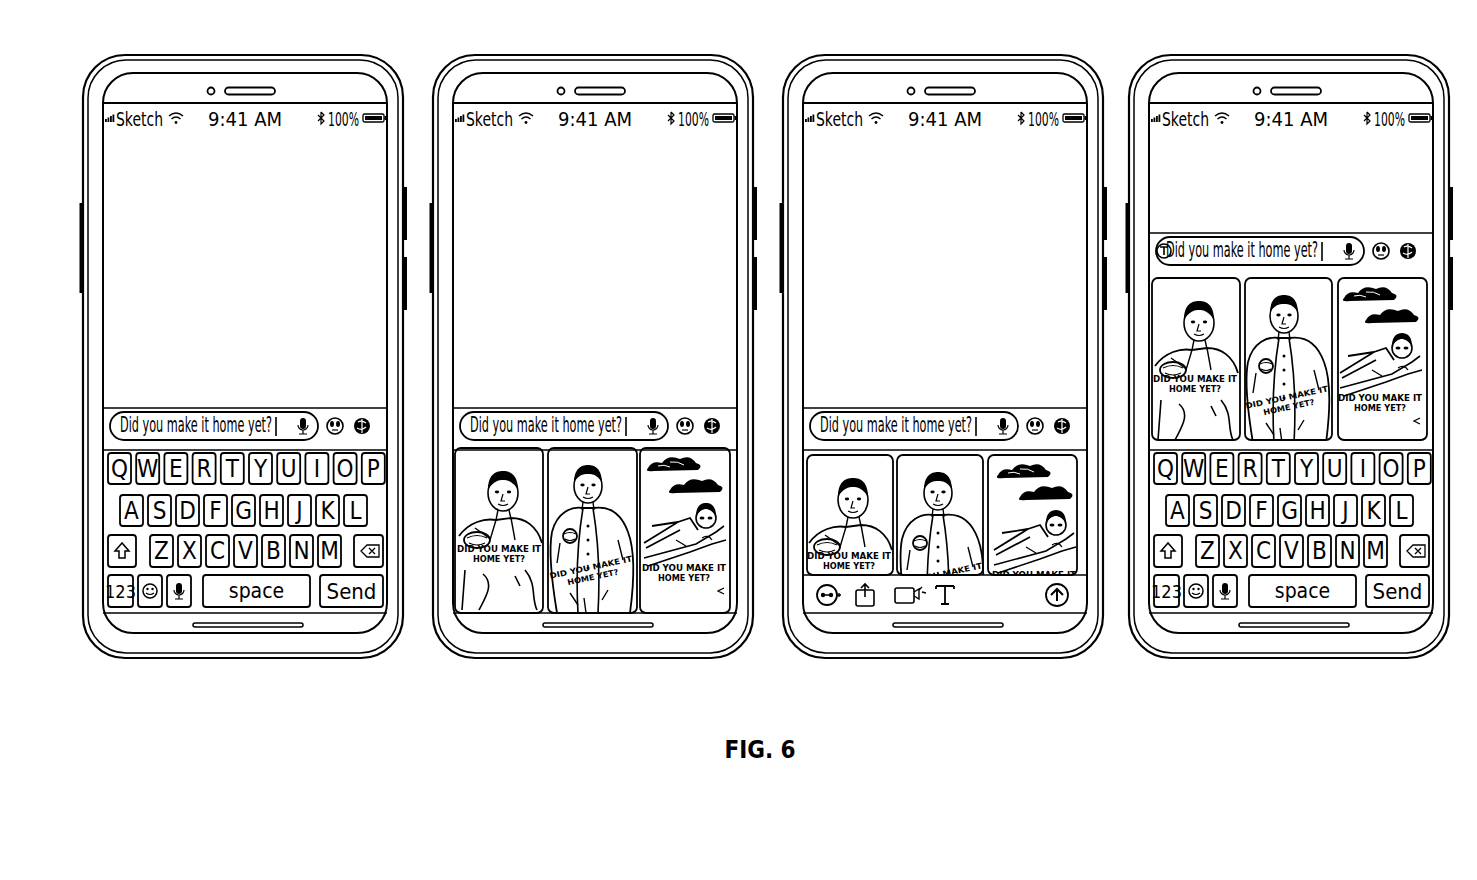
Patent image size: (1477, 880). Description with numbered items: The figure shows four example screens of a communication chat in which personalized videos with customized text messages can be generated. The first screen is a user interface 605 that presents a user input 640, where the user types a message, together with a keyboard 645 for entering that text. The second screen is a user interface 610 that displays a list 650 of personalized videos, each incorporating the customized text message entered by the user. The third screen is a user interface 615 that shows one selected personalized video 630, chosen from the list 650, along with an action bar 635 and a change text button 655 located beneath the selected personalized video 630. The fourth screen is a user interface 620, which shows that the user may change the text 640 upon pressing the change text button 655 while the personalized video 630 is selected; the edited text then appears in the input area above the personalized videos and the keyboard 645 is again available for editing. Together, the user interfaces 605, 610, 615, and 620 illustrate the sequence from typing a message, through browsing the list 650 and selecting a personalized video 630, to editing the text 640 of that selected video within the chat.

The user interface 605 is at (270, 170).
The user interface 610 is at (620, 170).
The user interface 615 is at (970, 170).
The user interface 620 is at (1316, 170).
The selected personalized video 630 is at (1063, 460).
The action bar 635 is at (827, 605).
The user input 640 is at (231, 412).
The keyboard 645 is at (157, 557).
The list of personalized videos 650 is at (713, 460).
The change text button 655 is at (945, 605).